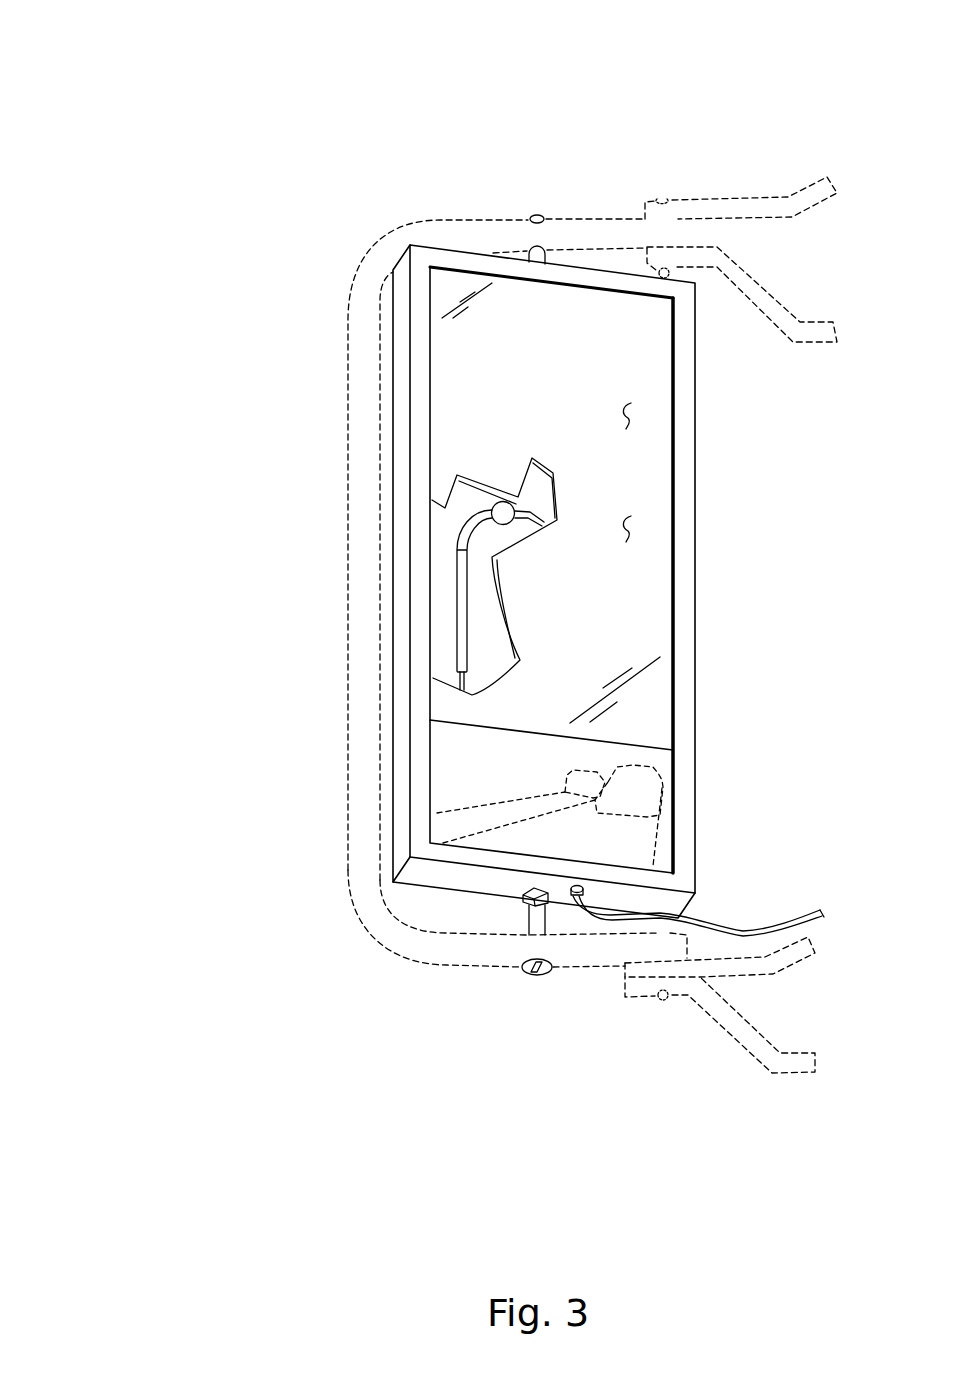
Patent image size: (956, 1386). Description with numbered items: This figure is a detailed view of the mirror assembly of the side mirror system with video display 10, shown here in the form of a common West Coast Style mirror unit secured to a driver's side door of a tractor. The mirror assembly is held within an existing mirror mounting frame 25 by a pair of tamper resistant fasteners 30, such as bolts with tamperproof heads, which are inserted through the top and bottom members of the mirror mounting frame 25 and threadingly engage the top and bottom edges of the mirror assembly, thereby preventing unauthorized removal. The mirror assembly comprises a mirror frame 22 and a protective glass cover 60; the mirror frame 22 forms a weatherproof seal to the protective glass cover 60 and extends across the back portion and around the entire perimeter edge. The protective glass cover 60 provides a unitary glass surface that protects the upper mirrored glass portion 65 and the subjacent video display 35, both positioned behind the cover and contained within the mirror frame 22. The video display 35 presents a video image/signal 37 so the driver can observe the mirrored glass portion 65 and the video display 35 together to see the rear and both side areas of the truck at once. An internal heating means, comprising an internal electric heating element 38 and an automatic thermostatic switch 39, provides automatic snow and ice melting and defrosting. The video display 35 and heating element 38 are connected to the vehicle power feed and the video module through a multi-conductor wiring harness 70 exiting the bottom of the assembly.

The side mirror system with video display 10 is at (157, 105).
The mirror frame 22 is at (405, 724).
The mirror mounting frame 25 is at (349, 368).
The tamper resistant fasteners 30 is at (530, 250).
The video display 35 is at (655, 762).
The video image/signal 37 is at (663, 788).
The internal electric heating element 38 is at (458, 585).
The automatic thermostatic switch 39 is at (500, 512).
The protective glass cover 60 is at (631, 532).
The upper mirrored glass portion 65 is at (630, 418).
The multi-conductor wiring harness 70 is at (777, 923).